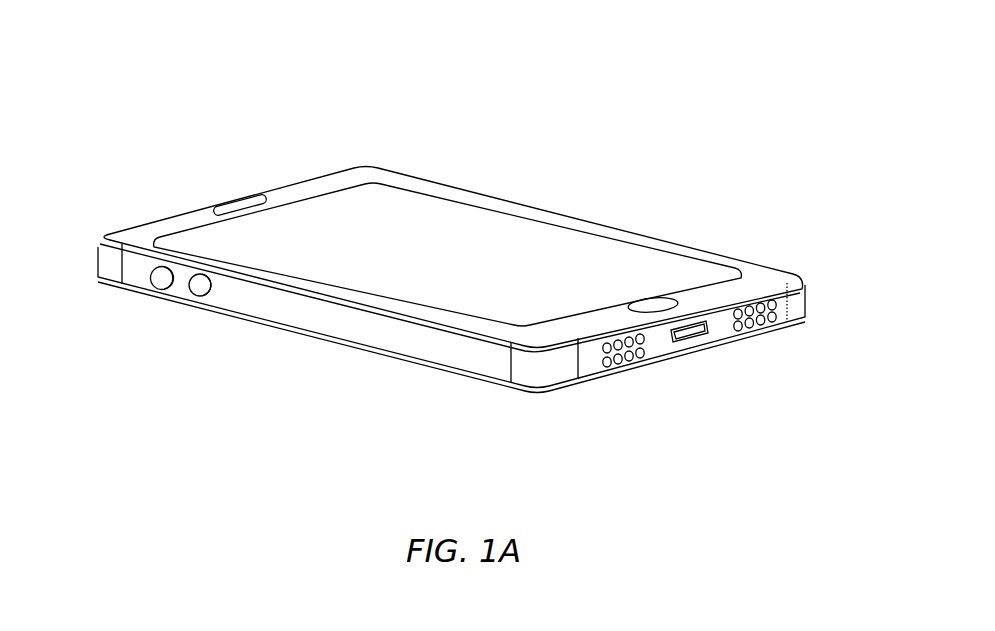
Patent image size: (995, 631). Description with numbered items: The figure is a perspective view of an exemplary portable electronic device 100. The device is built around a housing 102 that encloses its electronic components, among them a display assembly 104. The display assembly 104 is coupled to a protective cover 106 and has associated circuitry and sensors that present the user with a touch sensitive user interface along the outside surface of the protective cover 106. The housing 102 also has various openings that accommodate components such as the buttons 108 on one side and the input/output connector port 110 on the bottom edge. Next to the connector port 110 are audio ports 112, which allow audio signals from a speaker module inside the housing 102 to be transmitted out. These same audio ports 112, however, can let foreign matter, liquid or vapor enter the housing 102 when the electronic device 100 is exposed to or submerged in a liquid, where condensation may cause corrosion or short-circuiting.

The electronic device 100 is at (117, 67).
The housing 102 is at (310, 333).
The display assembly 104 is at (646, 261).
The protective cover 106 is at (432, 180).
The buttons 108 is at (200, 298).
The input/output (I/O) connector port 110 is at (685, 340).
The audio ports 112 is at (640, 365).